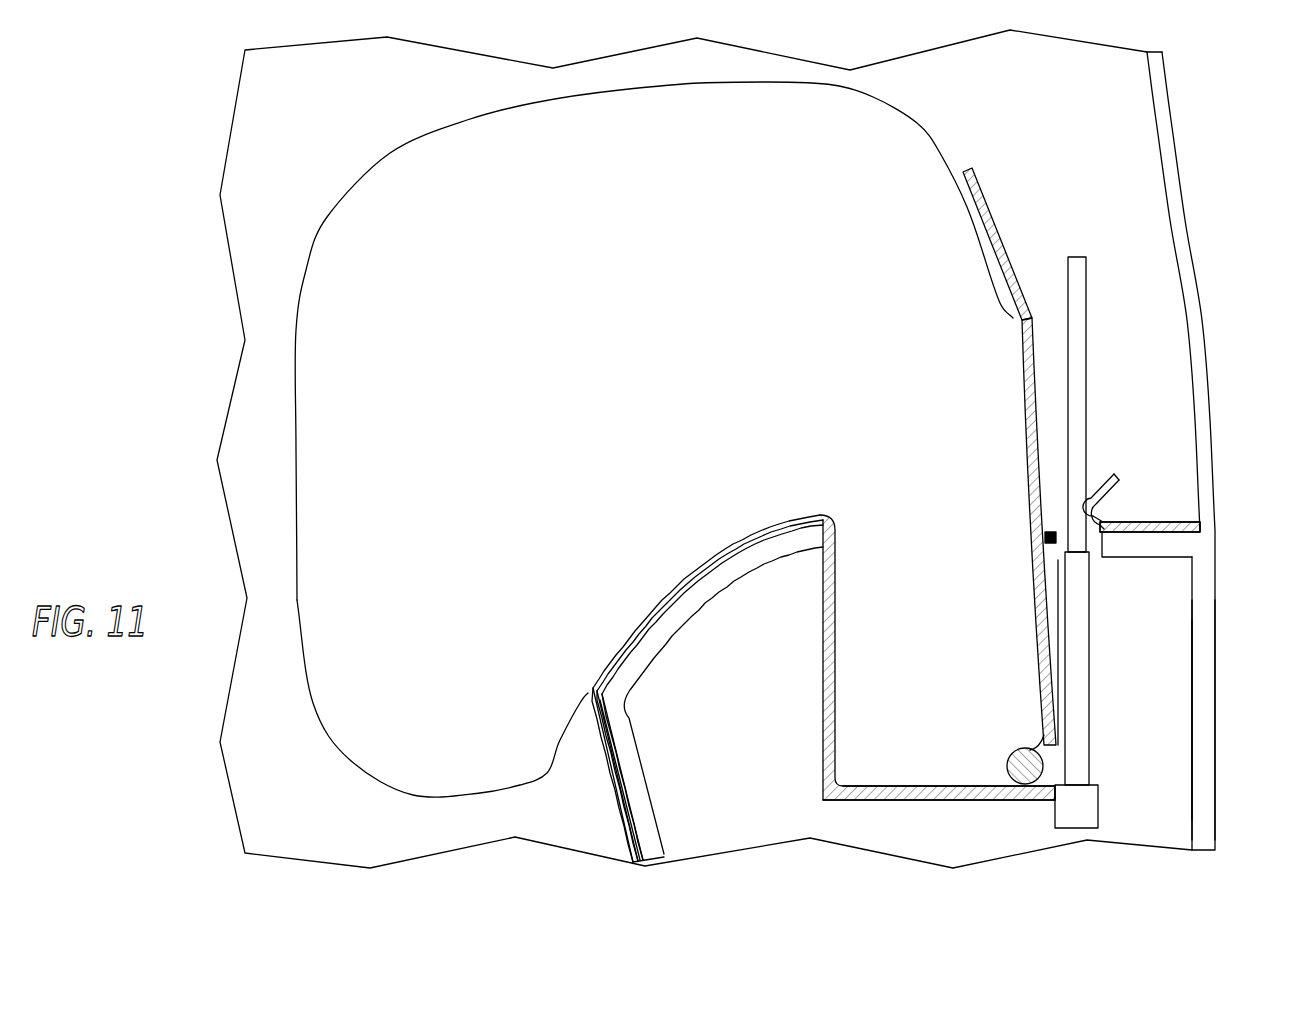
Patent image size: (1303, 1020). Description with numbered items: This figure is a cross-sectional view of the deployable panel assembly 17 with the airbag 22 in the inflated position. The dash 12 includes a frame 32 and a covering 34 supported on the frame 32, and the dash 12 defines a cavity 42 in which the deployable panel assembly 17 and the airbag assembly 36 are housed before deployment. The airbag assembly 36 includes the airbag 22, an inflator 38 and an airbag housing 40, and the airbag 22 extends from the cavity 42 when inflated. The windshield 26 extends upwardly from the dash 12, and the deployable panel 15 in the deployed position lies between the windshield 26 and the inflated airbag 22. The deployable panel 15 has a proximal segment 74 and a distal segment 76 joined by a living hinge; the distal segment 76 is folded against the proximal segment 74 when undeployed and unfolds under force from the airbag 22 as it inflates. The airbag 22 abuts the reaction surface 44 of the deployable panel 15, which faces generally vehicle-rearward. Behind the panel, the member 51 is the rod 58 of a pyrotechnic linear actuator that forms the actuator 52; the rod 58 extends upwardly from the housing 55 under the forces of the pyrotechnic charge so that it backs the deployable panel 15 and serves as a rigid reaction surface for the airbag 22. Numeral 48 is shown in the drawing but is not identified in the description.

The dash 12 is at (597, 826).
The deployable panel 15 is at (1138, 773).
The deployable panel assembly 17 is at (1058, 636).
The airbag 22 is at (392, 153).
The windshield 26 is at (1196, 256).
The frame 32 is at (1075, 829).
The covering 34 is at (602, 766).
The airbag assembly 36 is at (939, 823).
The inflator 38 is at (1047, 790).
The airbag housing 40 is at (873, 800).
The cavity 42 is at (752, 805).
The reaction surface 44 is at (1022, 360).
The pillar region 48 is at (291, 372).
The member 51 is at (1088, 455).
The actuator 52 is at (1110, 725).
The housing 55 is at (1090, 671).
The rod 58 is at (1150, 527).
The proximal segment 74 is at (1040, 398).
The distal segment 76 is at (997, 230).